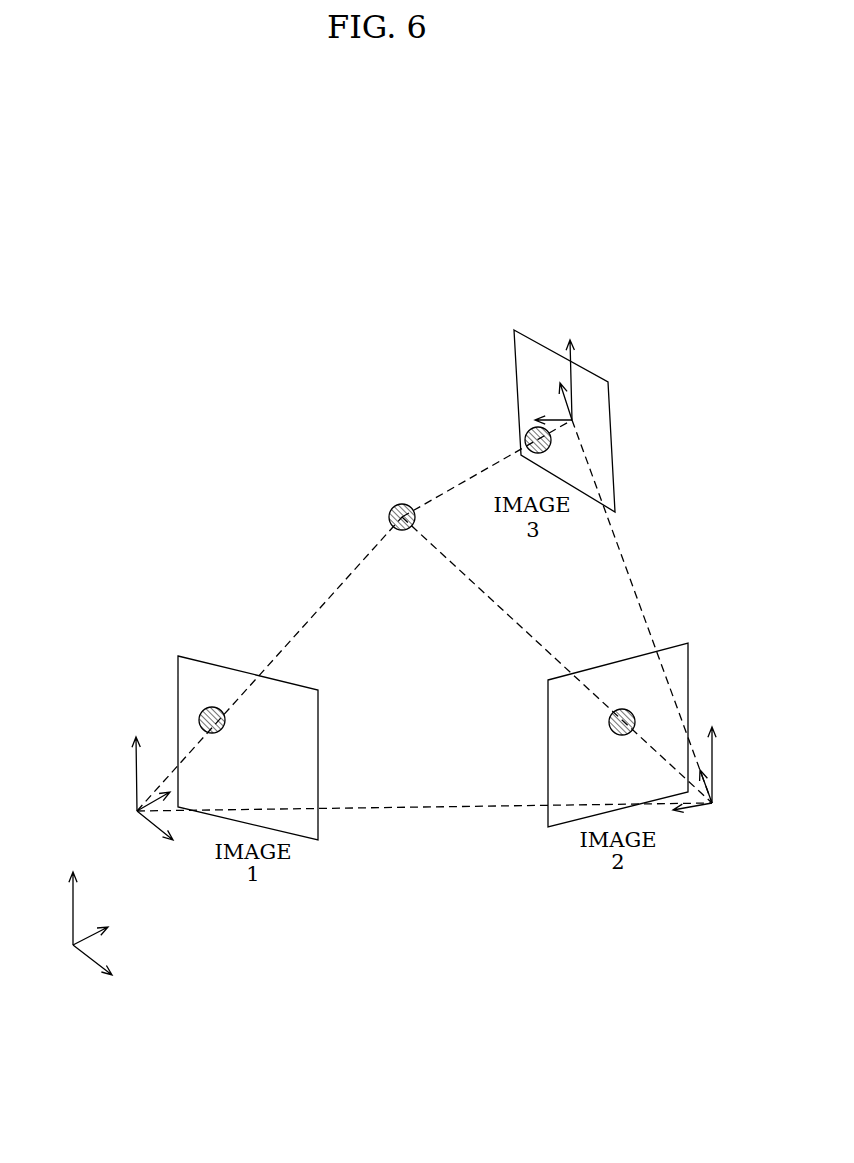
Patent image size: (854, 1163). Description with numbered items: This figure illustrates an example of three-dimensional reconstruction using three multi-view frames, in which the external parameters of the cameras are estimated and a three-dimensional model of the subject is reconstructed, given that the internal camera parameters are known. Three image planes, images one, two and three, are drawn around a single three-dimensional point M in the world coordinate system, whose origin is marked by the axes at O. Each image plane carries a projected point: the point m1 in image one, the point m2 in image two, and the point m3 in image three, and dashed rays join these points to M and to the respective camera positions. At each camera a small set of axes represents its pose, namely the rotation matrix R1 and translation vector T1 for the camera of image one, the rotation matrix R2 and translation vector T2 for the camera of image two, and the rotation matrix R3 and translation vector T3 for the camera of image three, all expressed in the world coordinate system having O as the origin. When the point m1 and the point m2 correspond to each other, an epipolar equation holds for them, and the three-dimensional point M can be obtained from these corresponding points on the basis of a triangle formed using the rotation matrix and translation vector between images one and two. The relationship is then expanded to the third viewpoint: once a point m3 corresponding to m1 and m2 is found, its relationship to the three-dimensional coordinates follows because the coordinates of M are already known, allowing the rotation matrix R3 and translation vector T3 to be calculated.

The three-dimensional point M is at (390, 507).
The point in image 1 m1 is at (227, 723).
The point in image 2 m2 is at (619, 735).
The point in image 3 m3 is at (549, 450).
The rotation matrix R1 is at (130, 774).
The translation vector T1 is at (134, 825).
The rotation matrix R2 is at (721, 765).
The translation vector T2 is at (706, 814).
The rotation matrix R3 is at (579, 380).
The translation vector T3 is at (569, 431).
The origin O is at (81, 923).